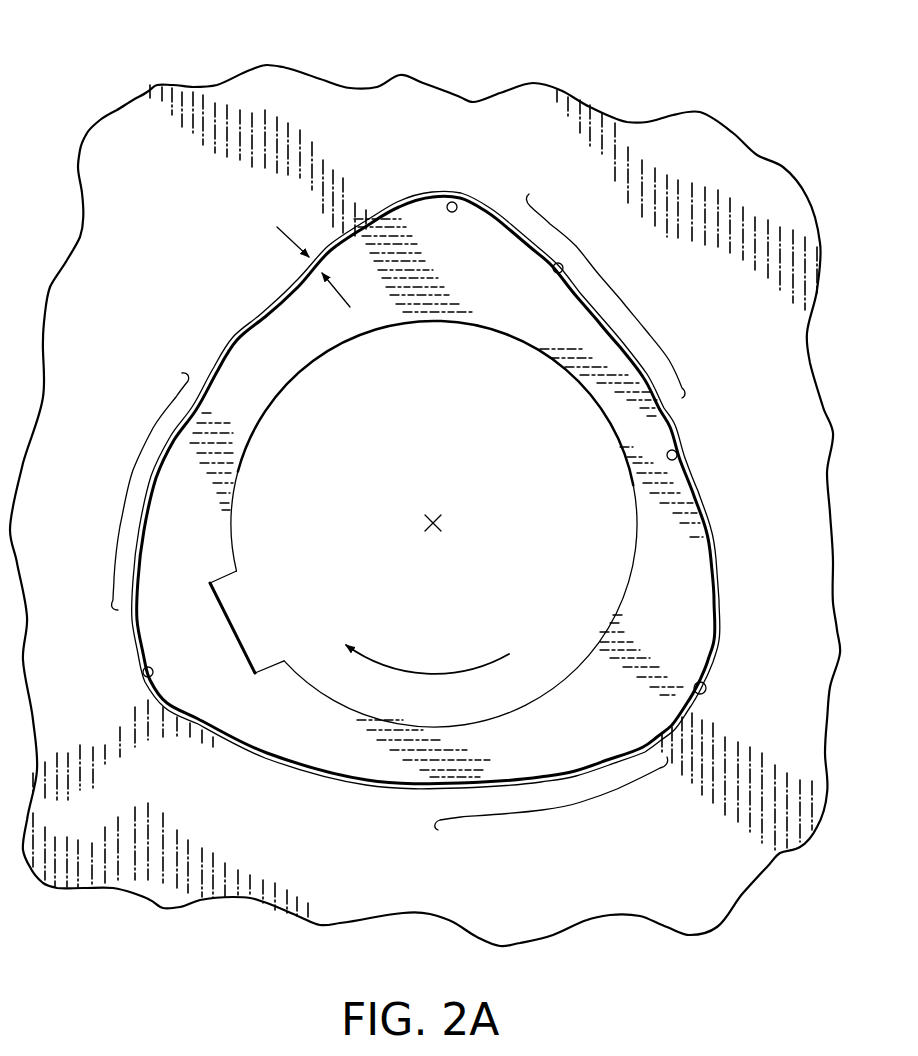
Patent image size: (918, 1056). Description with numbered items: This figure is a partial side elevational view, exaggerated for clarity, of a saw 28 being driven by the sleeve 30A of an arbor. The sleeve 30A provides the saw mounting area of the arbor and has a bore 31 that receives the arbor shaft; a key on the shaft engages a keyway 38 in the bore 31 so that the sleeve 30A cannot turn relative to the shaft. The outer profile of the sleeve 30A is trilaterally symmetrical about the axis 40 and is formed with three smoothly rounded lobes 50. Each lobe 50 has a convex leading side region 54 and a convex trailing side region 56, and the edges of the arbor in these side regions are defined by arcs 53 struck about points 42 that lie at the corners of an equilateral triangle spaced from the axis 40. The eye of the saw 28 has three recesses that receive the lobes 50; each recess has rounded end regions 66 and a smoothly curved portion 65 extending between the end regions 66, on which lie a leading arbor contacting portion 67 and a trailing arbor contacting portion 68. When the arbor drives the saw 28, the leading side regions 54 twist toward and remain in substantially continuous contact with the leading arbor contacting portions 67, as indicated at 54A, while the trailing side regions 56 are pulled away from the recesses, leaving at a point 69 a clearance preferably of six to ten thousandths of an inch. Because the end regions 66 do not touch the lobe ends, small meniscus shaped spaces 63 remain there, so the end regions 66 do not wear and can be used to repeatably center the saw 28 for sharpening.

The saw 28 is at (706, 138).
The sleeve 30A is at (250, 365).
The bore 31 is at (415, 723).
The keyway 38 is at (227, 598).
The axis 40 is at (430, 522).
The points 42 is at (417, 673).
The lobes 50 is at (433, 236).
The arcs 53 is at (221, 371).
The leading side region 54 is at (556, 266).
The substantially continuous contact region 54A is at (619, 289).
The trailing side region 56 is at (294, 287).
The meniscus shaped spaces 63 is at (483, 212).
The smoothly curved portion 65 is at (219, 390).
The end region 66 is at (456, 203).
The leading arbor contacting portion 67 is at (583, 299).
The trailing arbor contacting portion 68 is at (268, 317).
The point 69 is at (287, 236).